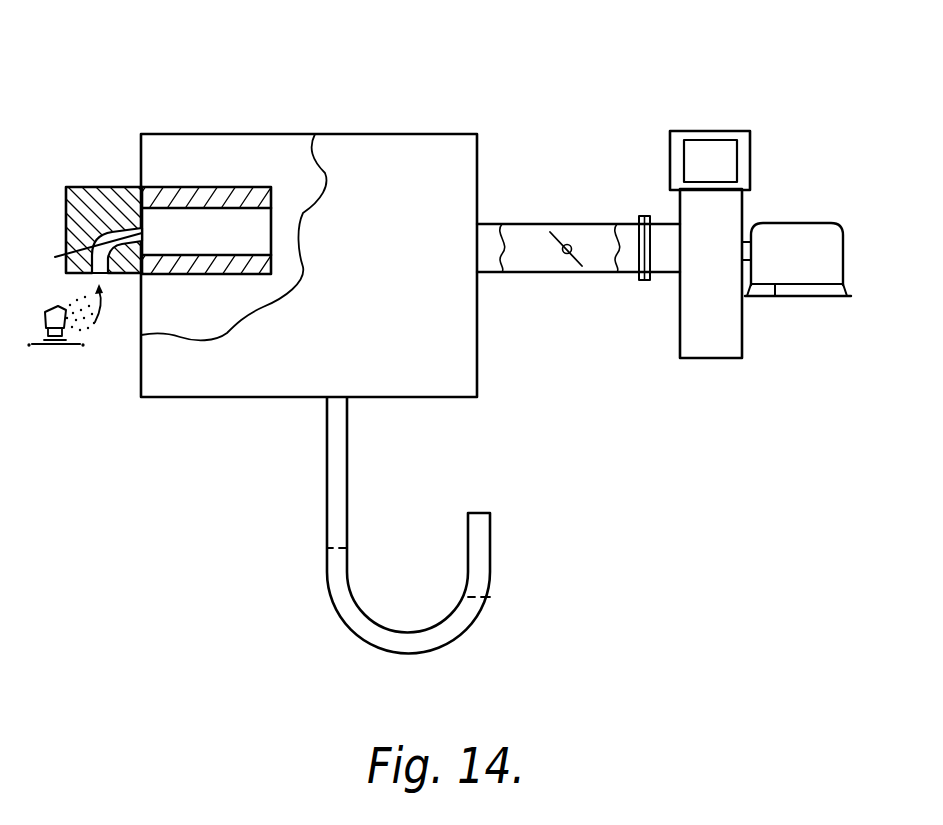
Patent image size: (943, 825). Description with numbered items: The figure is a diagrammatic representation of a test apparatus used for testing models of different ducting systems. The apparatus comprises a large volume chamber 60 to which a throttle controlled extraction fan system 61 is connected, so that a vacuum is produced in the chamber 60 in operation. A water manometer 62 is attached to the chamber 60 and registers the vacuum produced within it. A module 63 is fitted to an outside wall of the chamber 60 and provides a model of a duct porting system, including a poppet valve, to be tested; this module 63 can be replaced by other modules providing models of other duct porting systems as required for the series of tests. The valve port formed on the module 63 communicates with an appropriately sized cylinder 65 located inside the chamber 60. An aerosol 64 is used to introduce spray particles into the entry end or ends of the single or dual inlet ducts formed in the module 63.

The large volume chamber 60 is at (380, 150).
The throttle controlled extraction fan system 61 is at (718, 108).
The water manometer 62 is at (331, 476).
The module 63 is at (98, 200).
The aerosol 64 is at (53, 350).
The cylinder 65 is at (198, 197).